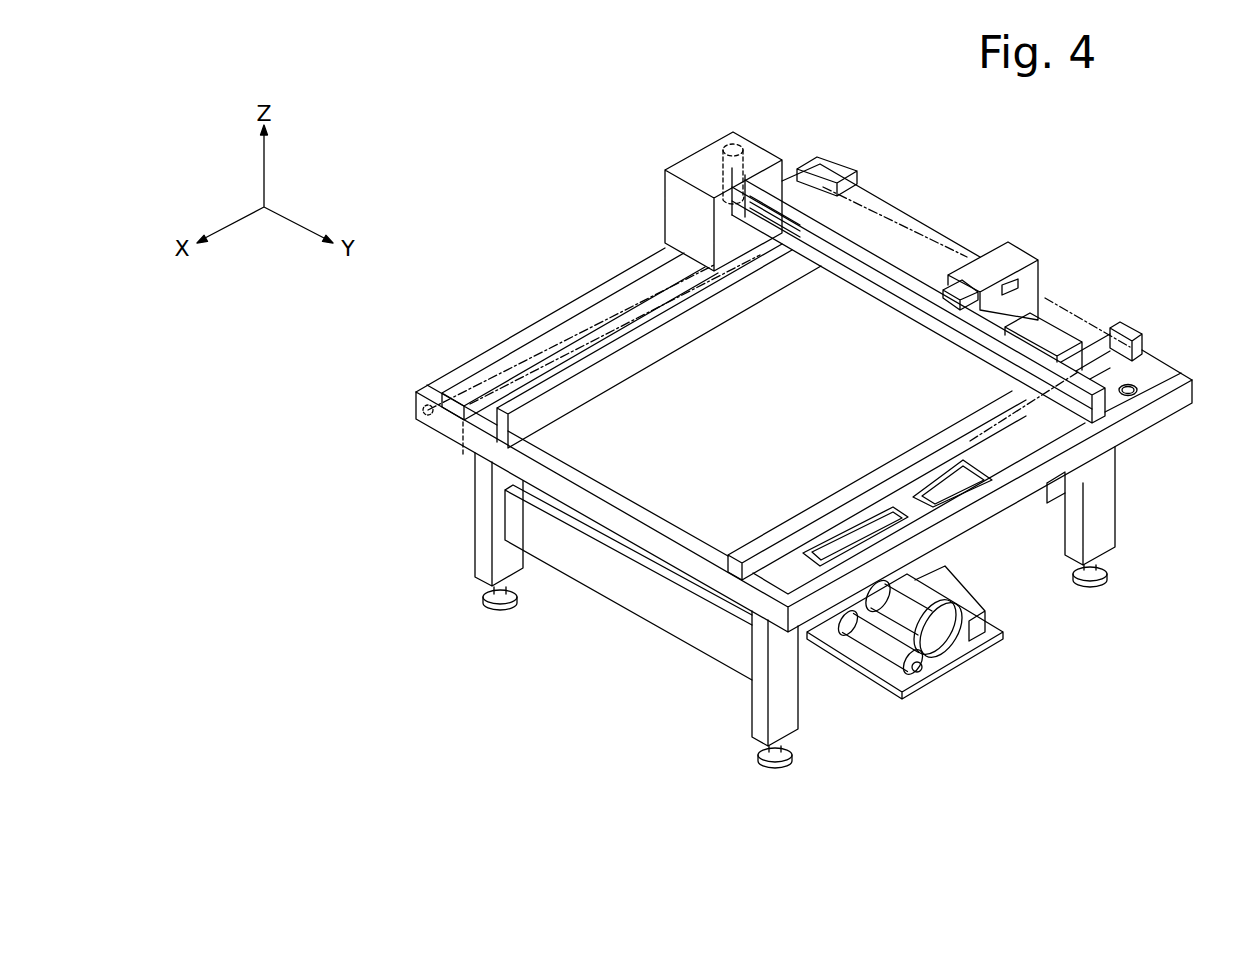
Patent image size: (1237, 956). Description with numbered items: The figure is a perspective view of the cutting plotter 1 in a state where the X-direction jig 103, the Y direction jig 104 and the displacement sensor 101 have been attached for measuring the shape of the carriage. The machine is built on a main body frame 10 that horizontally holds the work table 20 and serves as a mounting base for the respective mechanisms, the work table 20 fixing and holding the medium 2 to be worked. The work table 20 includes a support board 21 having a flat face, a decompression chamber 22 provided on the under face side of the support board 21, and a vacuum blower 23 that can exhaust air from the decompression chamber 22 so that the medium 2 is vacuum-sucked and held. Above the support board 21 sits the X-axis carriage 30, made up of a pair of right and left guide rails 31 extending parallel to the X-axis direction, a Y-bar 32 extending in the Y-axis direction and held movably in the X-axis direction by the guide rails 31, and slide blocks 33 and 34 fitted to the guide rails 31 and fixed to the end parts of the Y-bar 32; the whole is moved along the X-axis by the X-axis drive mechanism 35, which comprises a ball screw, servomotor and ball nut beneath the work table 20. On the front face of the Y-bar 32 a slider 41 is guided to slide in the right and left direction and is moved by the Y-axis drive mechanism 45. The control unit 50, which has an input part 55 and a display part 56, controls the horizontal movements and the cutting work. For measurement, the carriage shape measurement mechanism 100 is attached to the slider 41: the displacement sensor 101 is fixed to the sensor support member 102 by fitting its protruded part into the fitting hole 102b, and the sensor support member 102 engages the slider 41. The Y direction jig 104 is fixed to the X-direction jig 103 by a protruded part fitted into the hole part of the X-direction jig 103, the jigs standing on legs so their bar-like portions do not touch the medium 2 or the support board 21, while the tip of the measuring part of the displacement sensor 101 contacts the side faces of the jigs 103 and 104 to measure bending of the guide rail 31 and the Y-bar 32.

The cutting plotter 1 is at (1115, 133).
The medium to be worked 2 is at (741, 410).
The main body frame 10 is at (473, 503).
The work table 20 is at (545, 290).
The support board 21 is at (570, 475).
The decompression chamber 22 is at (652, 540).
The vacuum blower 23 is at (963, 665).
The X-axis carriage 30 is at (925, 247).
The guide rail 31 is at (637, 290).
The Y-bar 32 is at (855, 230).
The slide block 33 is at (1064, 332).
The slide block 34 is at (703, 160).
The X-axis drive mechanism 35 is at (422, 408).
The slider 41 is at (1023, 293).
The Y-axis drive mechanism 45 is at (743, 137).
The control unit 50 is at (930, 518).
The input part 55 is at (830, 555).
The display part 56 is at (953, 488).
The carriage shape measurement mechanism 100 is at (852, 346).
The displacement sensor 101 is at (953, 298).
The sensor support member 102 is at (1014, 248).
The fitting hole 102b is at (1020, 283).
The X-direction jig 103 is at (872, 262).
The Y direction jig 104 is at (538, 390).